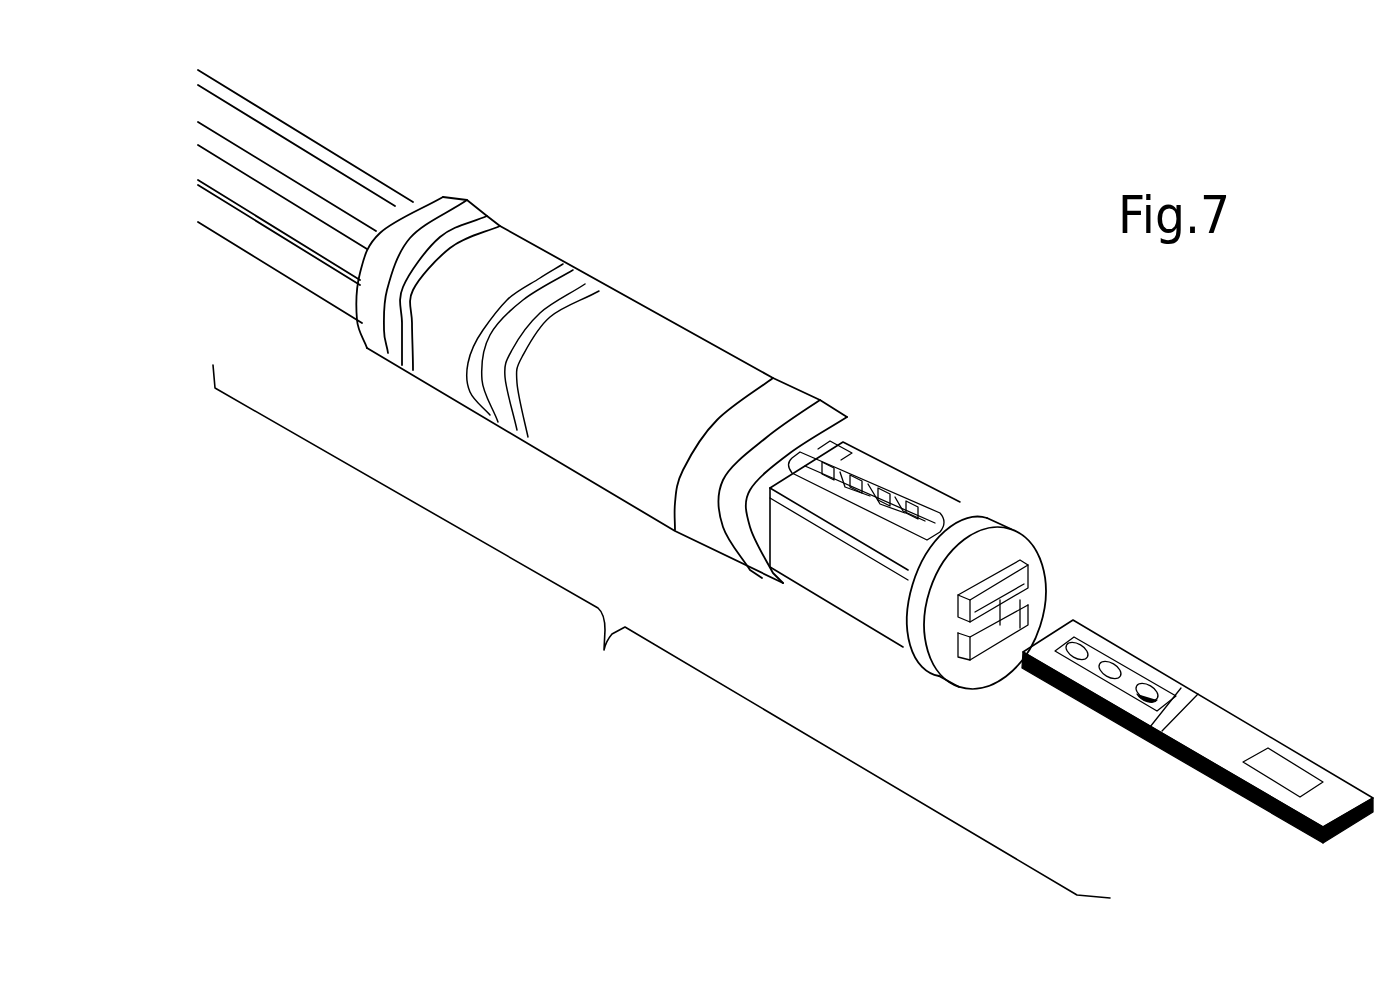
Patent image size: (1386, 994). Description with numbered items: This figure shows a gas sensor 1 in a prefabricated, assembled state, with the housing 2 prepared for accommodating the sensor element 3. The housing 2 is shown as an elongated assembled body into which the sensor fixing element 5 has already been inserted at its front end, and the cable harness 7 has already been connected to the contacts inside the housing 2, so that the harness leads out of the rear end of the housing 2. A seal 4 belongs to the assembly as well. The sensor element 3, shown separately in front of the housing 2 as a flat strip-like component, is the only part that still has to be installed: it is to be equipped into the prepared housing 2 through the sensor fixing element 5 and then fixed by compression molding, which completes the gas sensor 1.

The gas sensor 1 is at (593, 709).
The housing 2 is at (928, 484).
The sensor element 3 is at (1223, 720).
The seal 4 is at (1180, 687).
The sensor fixing element 5 is at (1035, 562).
The cable harness 7 is at (703, 337).